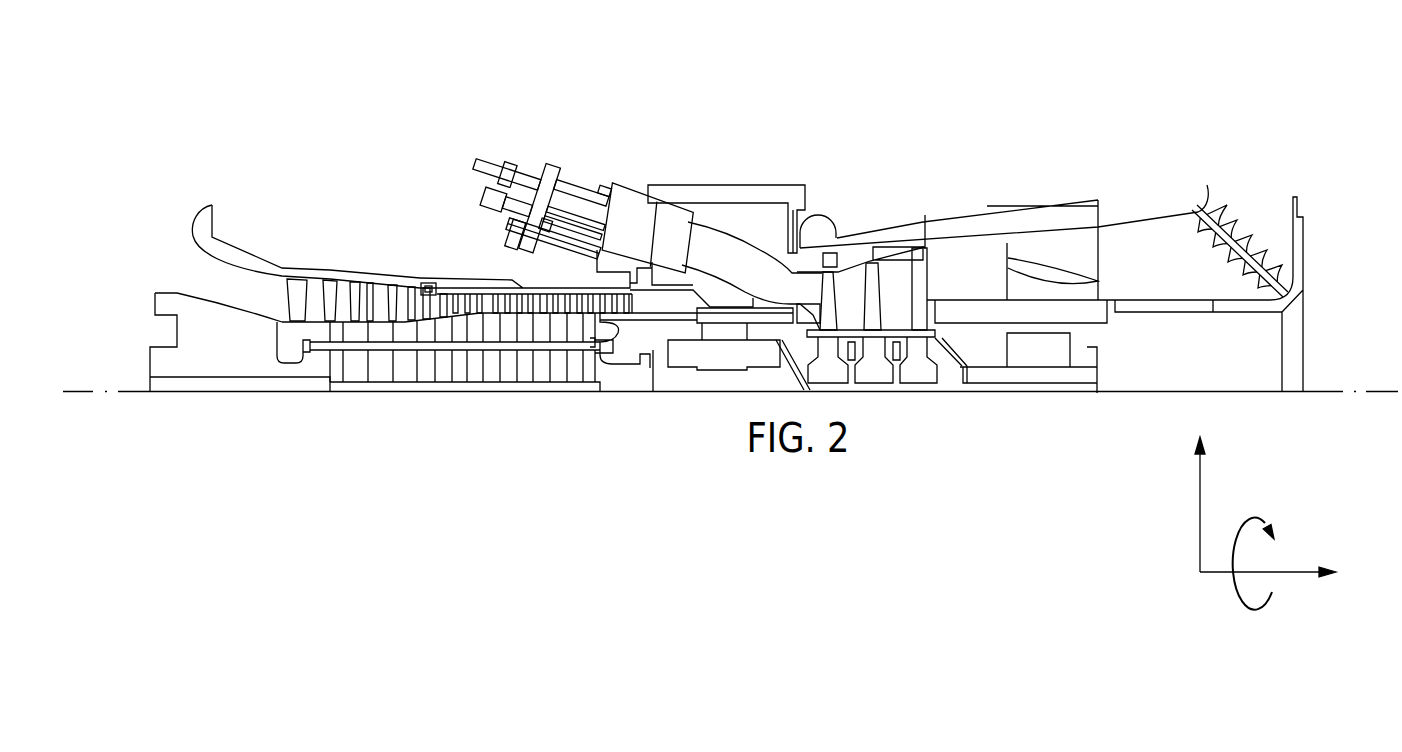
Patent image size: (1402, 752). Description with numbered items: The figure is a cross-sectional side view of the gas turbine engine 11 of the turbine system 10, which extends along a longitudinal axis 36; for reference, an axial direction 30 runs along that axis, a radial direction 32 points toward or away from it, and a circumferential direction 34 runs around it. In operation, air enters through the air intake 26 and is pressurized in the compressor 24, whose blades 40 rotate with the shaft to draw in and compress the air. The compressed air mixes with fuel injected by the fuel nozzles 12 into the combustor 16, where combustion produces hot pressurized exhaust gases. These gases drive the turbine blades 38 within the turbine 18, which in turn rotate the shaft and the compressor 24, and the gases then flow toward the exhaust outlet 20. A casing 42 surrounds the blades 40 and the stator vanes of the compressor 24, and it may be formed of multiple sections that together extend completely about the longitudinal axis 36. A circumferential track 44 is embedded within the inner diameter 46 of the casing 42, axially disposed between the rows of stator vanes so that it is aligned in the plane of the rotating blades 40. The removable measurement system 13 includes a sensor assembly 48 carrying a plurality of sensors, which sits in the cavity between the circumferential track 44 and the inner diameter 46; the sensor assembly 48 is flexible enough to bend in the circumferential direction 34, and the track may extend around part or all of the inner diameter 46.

The turbine system 10 is at (493, 159).
The gas turbine engine 11 is at (478, 78).
The fuel nozzles 12 is at (538, 177).
The measurement system 13 is at (479, 288).
The combustor 16 is at (540, 148).
The turbine 18 is at (930, 238).
The exhaust outlet 20 is at (1240, 220).
The compressor 24 is at (486, 205).
The air intake 26 is at (208, 298).
The axial direction 30 is at (1295, 577).
The radial direction 32 is at (1198, 502).
The circumferential direction 34 is at (1255, 518).
The longitudinal axis 36 is at (1375, 390).
The turbine blades 38 is at (867, 260).
The blades 40 is at (297, 283).
The casing 42 is at (540, 256).
The circumferential track 44 is at (558, 250).
The inner diameter 46 is at (358, 300).
The sensor assembly 48 is at (419, 276).